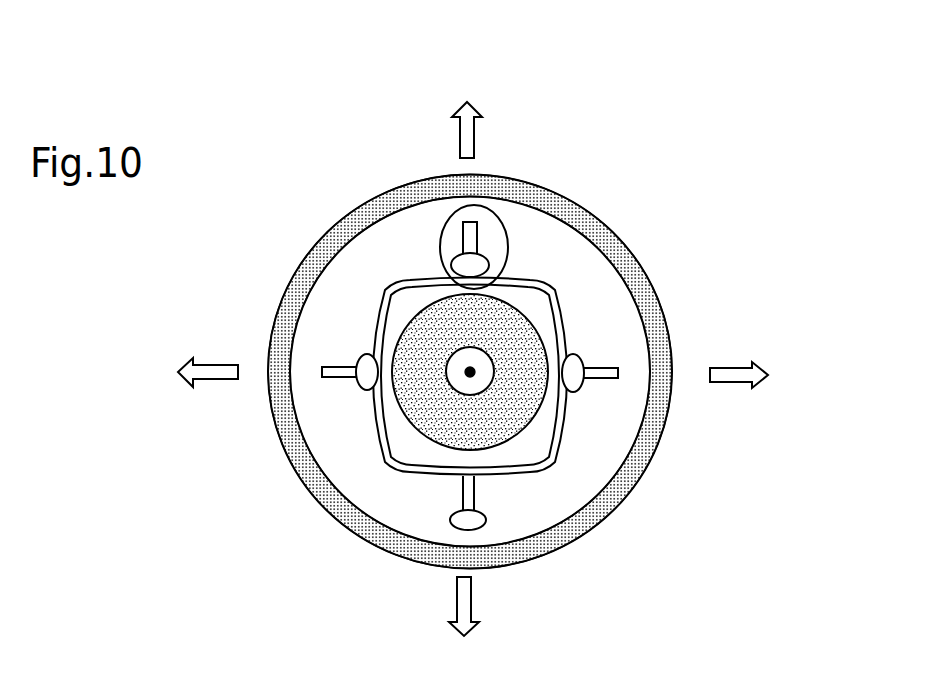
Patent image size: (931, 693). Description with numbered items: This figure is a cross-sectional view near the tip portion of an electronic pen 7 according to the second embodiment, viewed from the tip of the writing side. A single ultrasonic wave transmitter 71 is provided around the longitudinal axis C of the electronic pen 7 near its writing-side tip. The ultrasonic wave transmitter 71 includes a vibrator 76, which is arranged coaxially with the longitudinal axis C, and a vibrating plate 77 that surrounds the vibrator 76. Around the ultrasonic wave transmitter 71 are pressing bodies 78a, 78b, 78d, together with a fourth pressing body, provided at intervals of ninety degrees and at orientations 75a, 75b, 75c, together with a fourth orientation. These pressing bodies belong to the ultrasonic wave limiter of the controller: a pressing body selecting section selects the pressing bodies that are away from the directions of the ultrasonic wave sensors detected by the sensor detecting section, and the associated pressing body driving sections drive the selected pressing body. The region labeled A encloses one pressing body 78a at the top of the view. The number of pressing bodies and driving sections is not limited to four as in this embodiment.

The electronic pen 7 is at (528, 108).
The ultrasonic wave transmitter 71 is at (521, 266).
The vibrator 76 is at (520, 323).
The vibrating plate 77 is at (377, 303).
The pressing body 78a is at (462, 257).
The pressing body 78b is at (585, 357).
The pressing body 78d is at (357, 386).
The orientation 75a is at (464, 114).
The orientation 75b is at (474, 373).
The orientation 75c is at (484, 530).
The detail region A is at (430, 226).
The longitudinal axis C is at (470, 372).